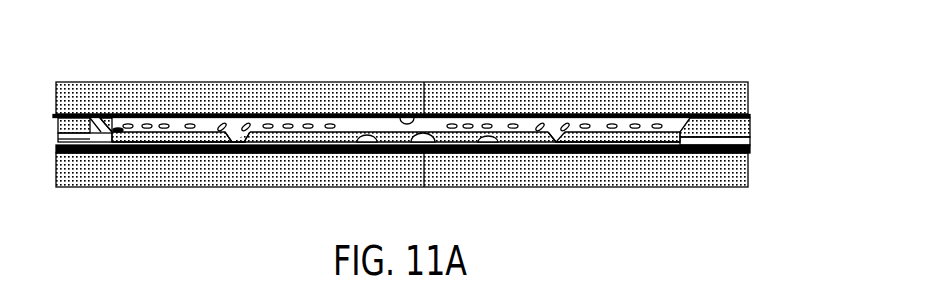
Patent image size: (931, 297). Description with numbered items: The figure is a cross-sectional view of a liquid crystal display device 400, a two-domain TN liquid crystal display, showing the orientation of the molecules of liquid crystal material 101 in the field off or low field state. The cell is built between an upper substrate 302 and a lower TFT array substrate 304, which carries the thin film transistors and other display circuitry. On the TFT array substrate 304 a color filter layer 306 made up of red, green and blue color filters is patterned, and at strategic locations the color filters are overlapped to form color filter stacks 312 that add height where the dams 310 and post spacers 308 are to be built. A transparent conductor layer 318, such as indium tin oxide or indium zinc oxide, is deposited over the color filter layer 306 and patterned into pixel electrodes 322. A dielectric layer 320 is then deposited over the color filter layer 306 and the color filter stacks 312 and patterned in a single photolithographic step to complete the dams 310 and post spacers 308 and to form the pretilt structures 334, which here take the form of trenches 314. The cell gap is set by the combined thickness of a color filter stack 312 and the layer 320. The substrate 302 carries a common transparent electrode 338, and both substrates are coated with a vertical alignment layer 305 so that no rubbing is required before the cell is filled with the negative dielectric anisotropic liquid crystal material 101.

The liquid crystal material 101 is at (309, 124).
The substrate 302 is at (564, 82).
The TFT array substrate 304 is at (57, 182).
The vertical alignment layer 305 is at (113, 140).
The color filter layer 306 is at (750, 153).
The post spacer 308 is at (755, 132).
The dam 310 is at (56, 129).
The color filter stack 312 is at (57, 139).
The trench 314 is at (234, 142).
The layer 318 is at (418, 138).
The layer 320 is at (750, 118).
The pixel electrode 322 is at (483, 141).
The pretilt structure 334 is at (238, 141).
The common transparent electrode 338 is at (412, 120).
The liquid crystal display device 400 is at (602, 240).